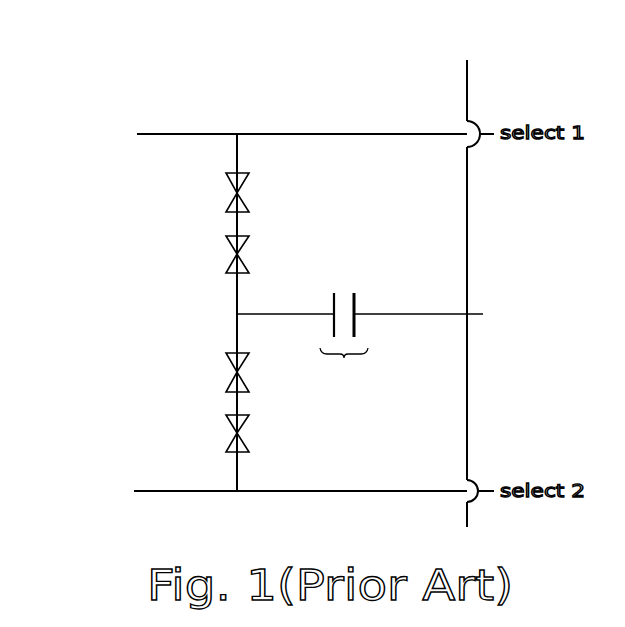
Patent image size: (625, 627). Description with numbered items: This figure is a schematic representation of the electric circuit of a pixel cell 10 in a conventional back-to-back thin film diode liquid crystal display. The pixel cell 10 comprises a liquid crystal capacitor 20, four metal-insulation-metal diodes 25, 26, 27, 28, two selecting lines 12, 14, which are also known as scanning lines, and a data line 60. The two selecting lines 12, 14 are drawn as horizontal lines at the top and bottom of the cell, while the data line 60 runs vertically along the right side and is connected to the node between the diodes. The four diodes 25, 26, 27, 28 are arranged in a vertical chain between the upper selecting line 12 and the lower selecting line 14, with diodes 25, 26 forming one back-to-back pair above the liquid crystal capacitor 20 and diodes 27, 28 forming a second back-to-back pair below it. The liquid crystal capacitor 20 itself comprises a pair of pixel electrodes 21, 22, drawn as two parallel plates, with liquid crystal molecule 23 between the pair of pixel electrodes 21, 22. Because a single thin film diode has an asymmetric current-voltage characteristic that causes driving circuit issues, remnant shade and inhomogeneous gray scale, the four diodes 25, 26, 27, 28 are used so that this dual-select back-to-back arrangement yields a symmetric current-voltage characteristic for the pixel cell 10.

The pixel cell 10 is at (65, 78).
The selecting line 12 is at (176, 133).
The selecting line 14 is at (176, 492).
The liquid crystal capacitor 20 is at (349, 298).
The pixel electrode 21 is at (333, 292).
The pixel electrode 22 is at (356, 292).
The liquid crystal molecule 23 is at (344, 291).
The metal-insulation-metal (MIM) diode 25 is at (228, 193).
The metal-insulation-metal (MIM) diode 26 is at (228, 255).
The metal-insulation-metal (MIM) diode 27 is at (228, 373).
The metal-insulation-metal (MIM) diode 28 is at (228, 434).
The data line 60 is at (469, 101).